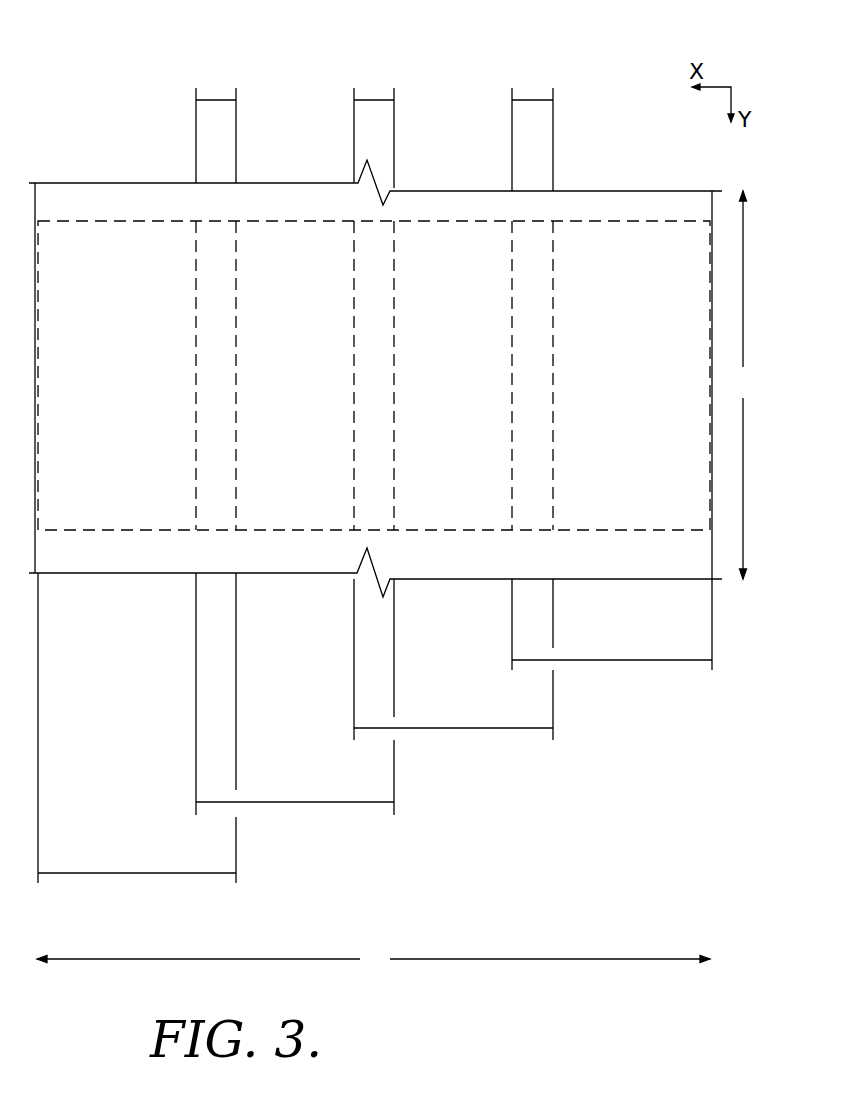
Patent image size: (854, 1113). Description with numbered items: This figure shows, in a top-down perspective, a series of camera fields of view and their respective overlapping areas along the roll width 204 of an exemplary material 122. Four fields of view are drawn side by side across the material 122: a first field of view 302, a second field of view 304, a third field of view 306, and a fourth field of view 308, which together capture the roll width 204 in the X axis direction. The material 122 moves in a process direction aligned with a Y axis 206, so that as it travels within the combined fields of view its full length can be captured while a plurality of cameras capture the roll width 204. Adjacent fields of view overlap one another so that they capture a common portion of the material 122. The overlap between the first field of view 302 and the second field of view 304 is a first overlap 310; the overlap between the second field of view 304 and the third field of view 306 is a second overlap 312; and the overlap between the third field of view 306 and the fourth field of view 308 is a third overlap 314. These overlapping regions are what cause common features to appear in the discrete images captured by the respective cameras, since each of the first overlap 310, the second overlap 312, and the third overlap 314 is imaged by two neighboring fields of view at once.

The material 122 is at (62, 202).
The overlap 1 310 is at (213, 57).
The overlap 2 312 is at (373, 57).
The overlap 3 314 is at (530, 57).
The FOV 1 302 is at (138, 908).
The FOV 2 304 is at (298, 838).
The FOV 3 306 is at (453, 762).
The FOV 4 308 is at (613, 695).
The Y axis 206 is at (752, 382).
The roll width 204 is at (377, 977).